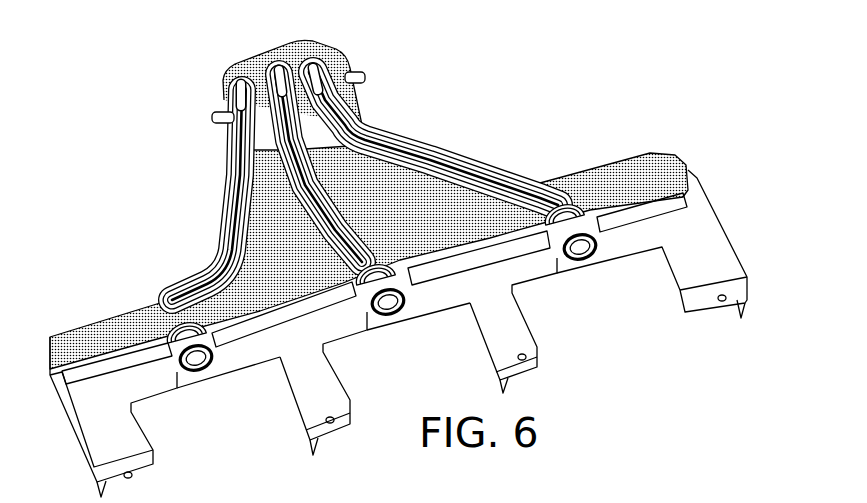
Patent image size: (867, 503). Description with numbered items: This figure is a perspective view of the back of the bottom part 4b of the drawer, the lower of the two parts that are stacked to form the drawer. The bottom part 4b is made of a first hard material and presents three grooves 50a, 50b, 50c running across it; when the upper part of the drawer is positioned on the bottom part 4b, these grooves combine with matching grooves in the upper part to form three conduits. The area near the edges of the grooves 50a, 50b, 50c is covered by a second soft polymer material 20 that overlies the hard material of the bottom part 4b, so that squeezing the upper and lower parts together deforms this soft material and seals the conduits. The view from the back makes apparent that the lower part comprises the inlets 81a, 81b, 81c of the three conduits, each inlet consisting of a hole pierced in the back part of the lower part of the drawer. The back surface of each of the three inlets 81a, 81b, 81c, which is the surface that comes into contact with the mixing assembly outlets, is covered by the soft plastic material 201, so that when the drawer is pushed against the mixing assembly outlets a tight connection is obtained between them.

The drawer lower part 4b is at (527, 108).
The soft polymer material 20 is at (110, 318).
The groove 50a is at (397, 163).
The groove 50b is at (263, 64).
The groove 50c is at (262, 213).
The drawer assembly inlet 81a is at (578, 278).
The drawer assembly inlet 81b is at (386, 334).
The drawer assembly inlet 81c is at (199, 392).
The soft plastic material 201 is at (208, 371).